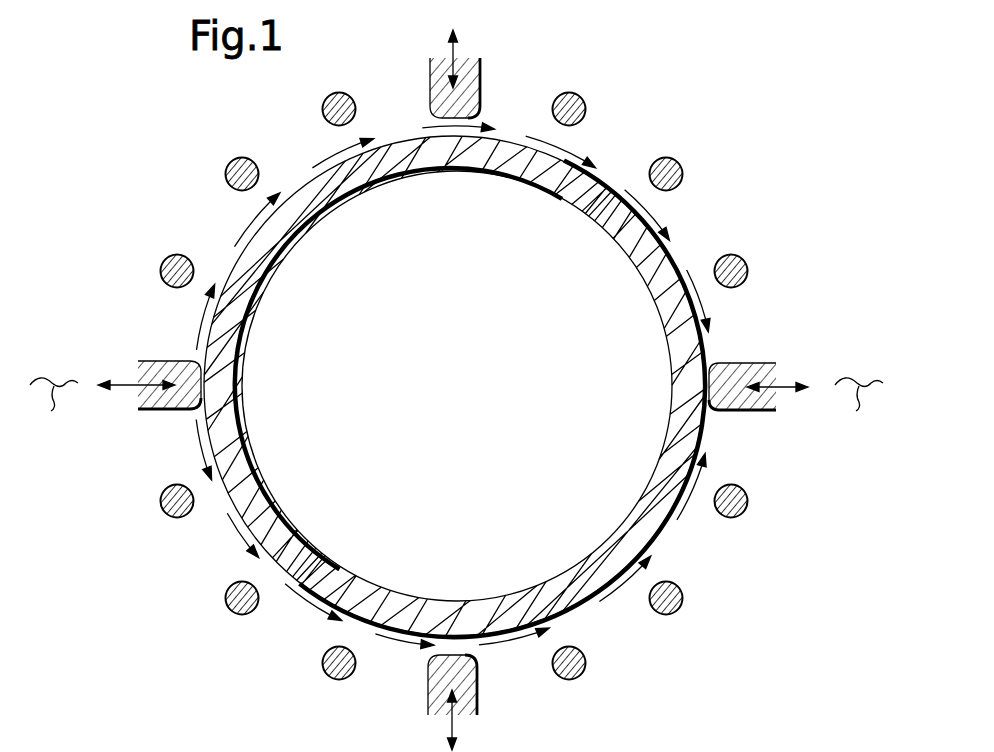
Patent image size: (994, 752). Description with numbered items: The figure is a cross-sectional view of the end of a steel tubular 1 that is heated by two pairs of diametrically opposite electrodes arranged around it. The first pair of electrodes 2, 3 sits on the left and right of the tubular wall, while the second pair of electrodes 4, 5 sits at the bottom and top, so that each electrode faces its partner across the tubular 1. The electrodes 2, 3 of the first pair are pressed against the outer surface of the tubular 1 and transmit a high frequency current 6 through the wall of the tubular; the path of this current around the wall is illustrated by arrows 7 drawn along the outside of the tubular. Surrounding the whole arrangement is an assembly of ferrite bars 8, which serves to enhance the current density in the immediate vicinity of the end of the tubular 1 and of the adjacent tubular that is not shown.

The steel tubular 1 is at (608, 235).
The electrode 2 is at (146, 410).
The electrode 3 is at (766, 410).
The electrode 4 is at (428, 703).
The electrode 5 is at (481, 71).
The high frequency current 6 is at (456, 412).
The arrows 7 is at (197, 327).
The ferrite bars 8 is at (683, 179).